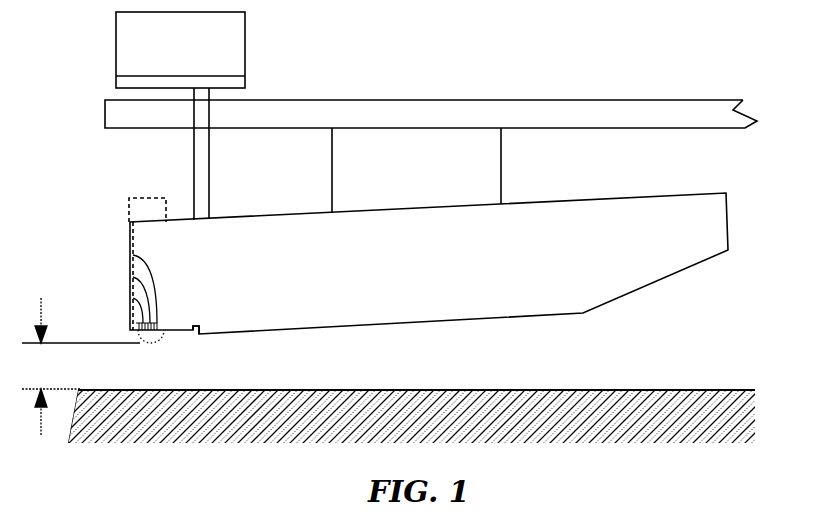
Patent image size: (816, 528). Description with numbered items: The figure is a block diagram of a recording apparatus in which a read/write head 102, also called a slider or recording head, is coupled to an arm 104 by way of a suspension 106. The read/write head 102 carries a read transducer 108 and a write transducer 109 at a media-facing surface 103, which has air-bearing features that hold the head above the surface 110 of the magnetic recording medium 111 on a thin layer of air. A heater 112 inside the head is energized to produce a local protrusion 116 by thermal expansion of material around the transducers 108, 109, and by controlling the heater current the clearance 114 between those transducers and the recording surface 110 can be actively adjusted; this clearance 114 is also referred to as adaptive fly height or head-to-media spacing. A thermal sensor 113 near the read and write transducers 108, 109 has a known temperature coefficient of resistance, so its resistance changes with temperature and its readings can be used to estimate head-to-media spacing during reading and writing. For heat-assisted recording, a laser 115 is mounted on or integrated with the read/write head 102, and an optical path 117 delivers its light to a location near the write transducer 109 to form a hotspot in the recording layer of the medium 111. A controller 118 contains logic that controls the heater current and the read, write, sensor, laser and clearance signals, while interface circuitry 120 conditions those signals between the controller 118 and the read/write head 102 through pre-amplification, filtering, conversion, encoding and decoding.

The read/write head 102 is at (652, 200).
The media-facing surface 103 is at (192, 333).
The arm 104 is at (632, 110).
The suspension 106 is at (501, 190).
The read transducer 108 is at (136, 297).
The write transducer 109 is at (131, 326).
The surface of the magnetic recording medium 110 is at (737, 390).
The magnetic recording medium 111 is at (680, 443).
The heater 112 is at (136, 279).
The thermal sensor 113 is at (136, 266).
The clearance 114 is at (81, 356).
The laser 115 is at (128, 214).
The local protrusion 116 is at (150, 343).
The optical path 117 is at (130, 237).
The controller 118 is at (246, 48).
The interface circuitry 120 is at (246, 84).